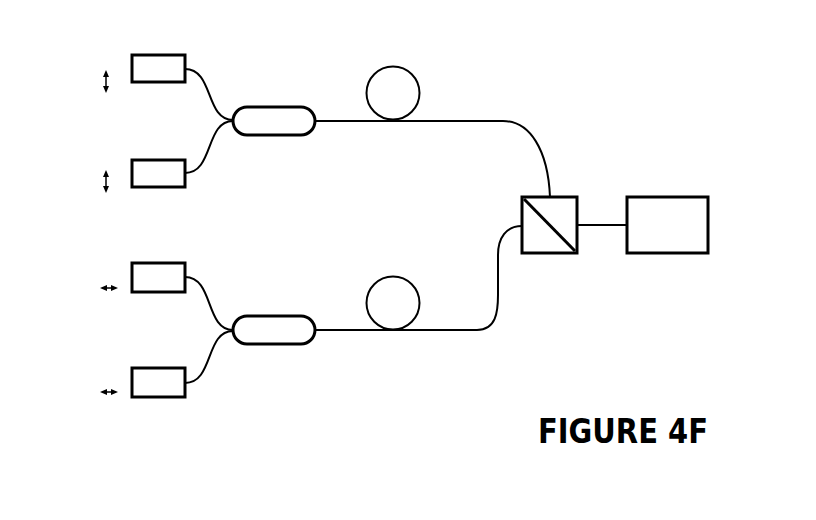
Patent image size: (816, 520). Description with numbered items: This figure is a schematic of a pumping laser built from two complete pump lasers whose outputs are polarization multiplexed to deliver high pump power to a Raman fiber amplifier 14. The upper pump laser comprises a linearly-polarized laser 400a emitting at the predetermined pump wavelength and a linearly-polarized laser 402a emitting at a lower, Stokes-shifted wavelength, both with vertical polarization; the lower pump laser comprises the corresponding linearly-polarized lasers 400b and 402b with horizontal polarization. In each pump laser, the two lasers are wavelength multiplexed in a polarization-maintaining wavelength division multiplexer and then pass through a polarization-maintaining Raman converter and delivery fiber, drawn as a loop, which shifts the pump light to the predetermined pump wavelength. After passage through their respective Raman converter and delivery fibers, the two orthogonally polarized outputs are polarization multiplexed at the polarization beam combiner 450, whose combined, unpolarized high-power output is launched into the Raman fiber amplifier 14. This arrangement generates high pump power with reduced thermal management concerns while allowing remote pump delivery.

The linearly-polarized laser 400a is at (221, 41).
The linearly-polarized laser 402a is at (205, 194).
The linearly-polarized laser 400b is at (210, 265).
The linearly-polarized laser 402b is at (205, 405).
The polarization beam combiner 450 is at (568, 285).
The Raman fiber amplifier 14 is at (696, 170).